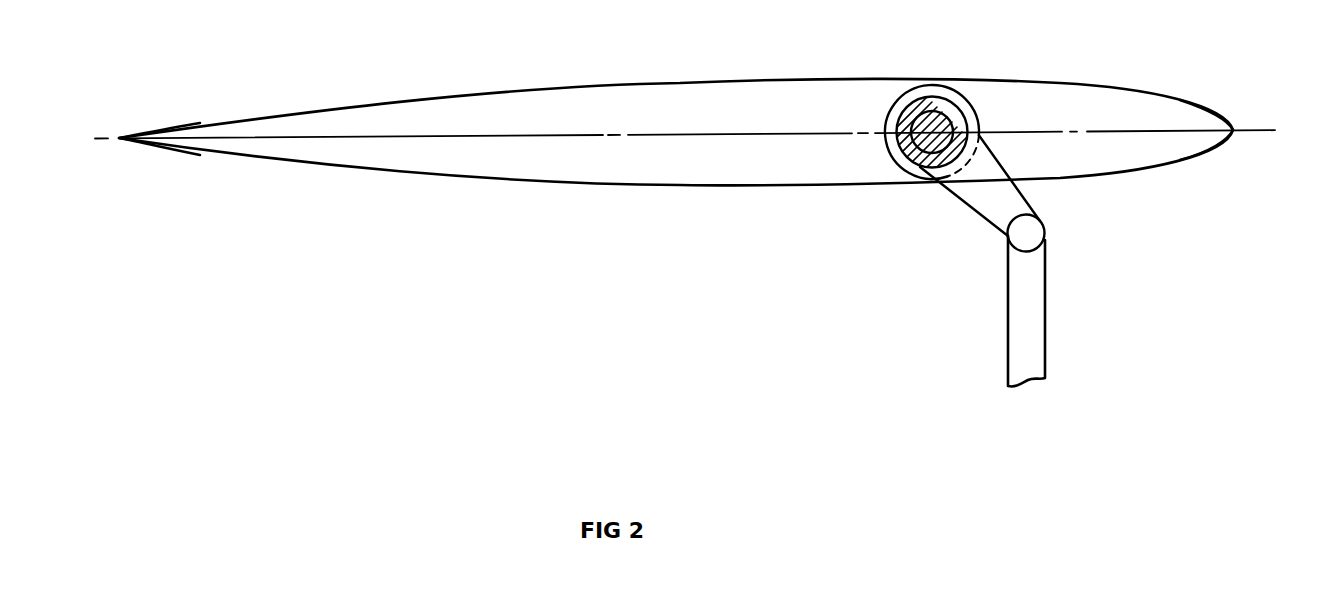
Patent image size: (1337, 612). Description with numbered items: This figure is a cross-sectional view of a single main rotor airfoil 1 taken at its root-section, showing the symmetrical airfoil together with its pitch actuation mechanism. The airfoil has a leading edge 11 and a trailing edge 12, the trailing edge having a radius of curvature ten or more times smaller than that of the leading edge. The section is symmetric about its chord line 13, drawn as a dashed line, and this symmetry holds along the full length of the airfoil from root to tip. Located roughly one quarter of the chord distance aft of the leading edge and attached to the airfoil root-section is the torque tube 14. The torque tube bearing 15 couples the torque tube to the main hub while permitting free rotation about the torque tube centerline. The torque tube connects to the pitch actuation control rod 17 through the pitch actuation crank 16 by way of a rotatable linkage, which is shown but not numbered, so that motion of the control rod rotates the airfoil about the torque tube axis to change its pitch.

The main rotor airfoil 1 is at (733, 105).
The leading edge 11 is at (1233, 130).
The trailing edge 12 is at (119, 138).
The chord line 13 is at (561, 135).
The torque tube 14 is at (942, 108).
The torque tube bearing 15 is at (895, 163).
The pitch actuation crank 16 is at (968, 188).
The pitch actuation control rod 17 is at (1030, 307).